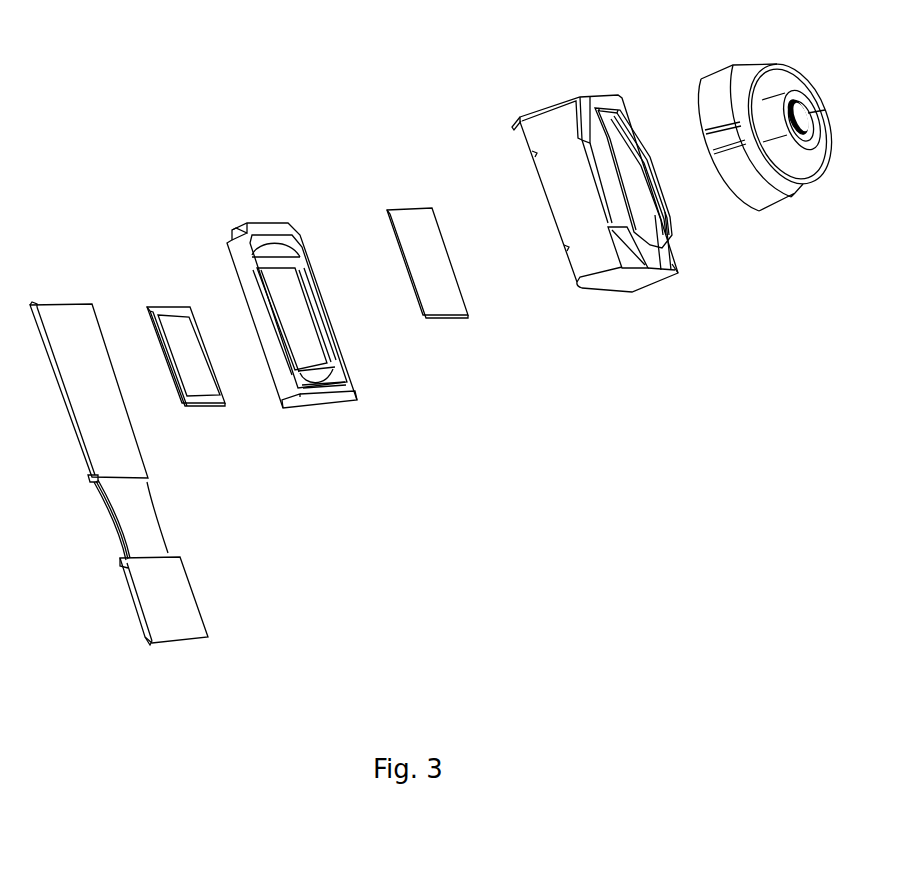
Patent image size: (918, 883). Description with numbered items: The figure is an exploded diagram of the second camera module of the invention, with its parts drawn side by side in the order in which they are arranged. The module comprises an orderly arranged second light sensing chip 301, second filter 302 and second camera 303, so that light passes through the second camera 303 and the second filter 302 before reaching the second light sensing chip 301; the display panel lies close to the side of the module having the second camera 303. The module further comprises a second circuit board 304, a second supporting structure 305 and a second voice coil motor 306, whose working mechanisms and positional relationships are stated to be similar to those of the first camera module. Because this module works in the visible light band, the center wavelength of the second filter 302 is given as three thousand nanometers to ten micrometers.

The second light sensing chip 301 is at (183, 310).
The second filter 302 is at (422, 230).
The second camera 303 is at (723, 90).
The second circuit board 304 is at (70, 325).
The second supporting structure 305 is at (238, 253).
The second voice coil motor 306 is at (552, 132).